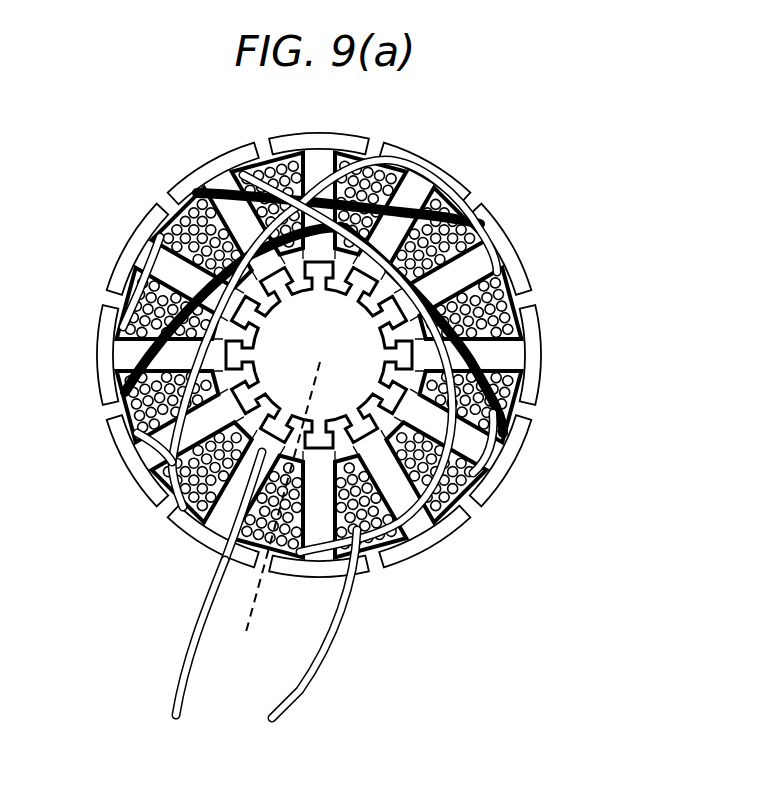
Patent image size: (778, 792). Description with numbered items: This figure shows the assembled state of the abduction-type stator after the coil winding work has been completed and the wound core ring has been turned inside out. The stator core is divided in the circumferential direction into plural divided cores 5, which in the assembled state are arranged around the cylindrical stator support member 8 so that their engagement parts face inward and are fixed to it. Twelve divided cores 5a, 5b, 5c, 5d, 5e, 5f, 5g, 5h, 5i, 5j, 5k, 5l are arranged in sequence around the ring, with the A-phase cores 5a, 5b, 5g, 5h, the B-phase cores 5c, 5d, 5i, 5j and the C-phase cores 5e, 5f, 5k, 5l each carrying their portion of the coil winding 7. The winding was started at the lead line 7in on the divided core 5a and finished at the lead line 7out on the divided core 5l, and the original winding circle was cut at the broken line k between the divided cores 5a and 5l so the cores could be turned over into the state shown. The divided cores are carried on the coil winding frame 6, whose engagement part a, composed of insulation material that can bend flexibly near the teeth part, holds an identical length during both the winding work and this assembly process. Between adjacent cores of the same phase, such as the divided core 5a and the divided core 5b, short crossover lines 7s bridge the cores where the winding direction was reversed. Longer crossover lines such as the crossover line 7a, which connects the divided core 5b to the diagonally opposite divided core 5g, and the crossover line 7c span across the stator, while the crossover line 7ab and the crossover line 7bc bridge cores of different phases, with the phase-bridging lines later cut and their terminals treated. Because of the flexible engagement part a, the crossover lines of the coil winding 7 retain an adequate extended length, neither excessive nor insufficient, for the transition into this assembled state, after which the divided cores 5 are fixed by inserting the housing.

The divided core 5 is at (235, 508).
The divided core for A-phase 5a is at (244, 485).
The divided core for A-phase 5b is at (189, 430).
The divided core for B-phase 5c is at (169, 355).
The divided core for B-phase 5d is at (188, 280).
The divided core for C-phase 5e is at (244, 223).
The divided core for C-phase 5f is at (319, 199).
The divided core for A-phase 5g is at (394, 225).
The divided core for A-phase 5h is at (450, 280).
The divided core for B-phase 5i is at (475, 355).
The divided core for B-phase 5j is at (449, 430).
The divided core for C-phase 5k is at (394, 485).
The divided core for C-phase 5l is at (319, 505).
The coil winding frame 6 is at (165, 462).
The coil winding 7 is at (230, 513).
The crossover line 7a is at (227, 347).
The crossover line 7ab is at (143, 365).
The crossover line 7bc is at (493, 363).
The crossover line 7c is at (423, 340).
The lead line 7in is at (178, 702).
The lead line 7out is at (280, 720).
The crossover line 7s is at (150, 445).
The stator support member 8 is at (319, 355).
The engagement part a is at (180, 505).
The broken line k is at (258, 590).